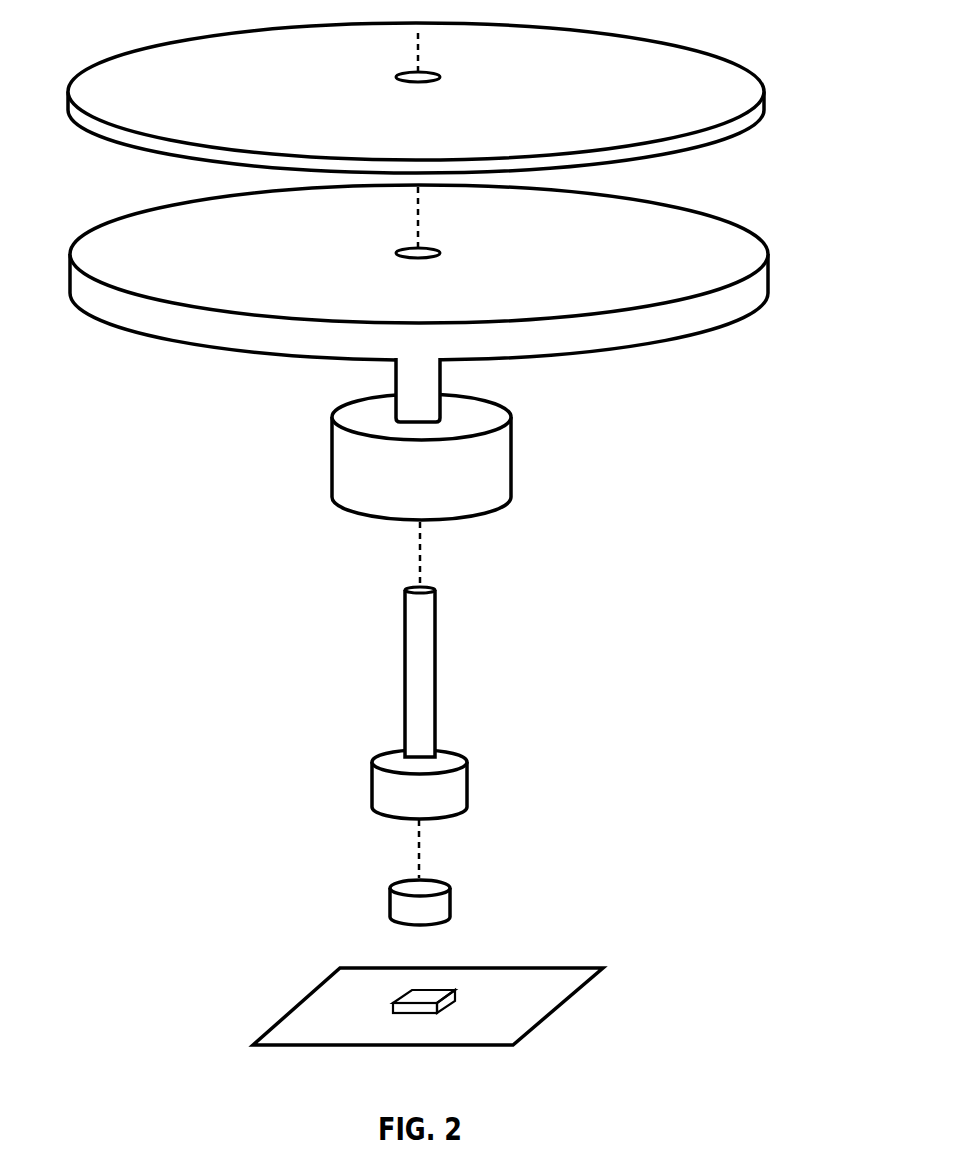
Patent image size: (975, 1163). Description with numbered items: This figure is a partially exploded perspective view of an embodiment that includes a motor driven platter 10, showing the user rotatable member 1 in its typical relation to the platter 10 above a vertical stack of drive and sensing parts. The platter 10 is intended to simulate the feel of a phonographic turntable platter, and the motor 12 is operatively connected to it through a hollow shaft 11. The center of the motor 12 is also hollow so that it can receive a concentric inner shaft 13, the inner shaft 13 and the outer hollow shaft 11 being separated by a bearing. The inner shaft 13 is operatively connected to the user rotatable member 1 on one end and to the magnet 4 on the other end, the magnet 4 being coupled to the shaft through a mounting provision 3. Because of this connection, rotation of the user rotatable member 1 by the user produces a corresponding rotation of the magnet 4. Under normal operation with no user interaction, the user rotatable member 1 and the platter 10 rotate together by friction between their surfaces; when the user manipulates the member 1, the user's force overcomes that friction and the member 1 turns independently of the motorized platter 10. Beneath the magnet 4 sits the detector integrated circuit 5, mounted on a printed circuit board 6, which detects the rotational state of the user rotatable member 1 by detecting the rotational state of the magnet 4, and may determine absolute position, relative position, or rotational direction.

The user rotatable member 1 is at (710, 78).
The motor driven platter 10 is at (726, 248).
The hollow shaft 11 is at (433, 374).
The motor 12 is at (511, 472).
The inner shaft 13 is at (421, 702).
The mounting provision 3 is at (456, 792).
The magnet 4 is at (443, 902).
The detector integrated circuit 5 is at (455, 1000).
The printed circuit board 6 is at (573, 990).